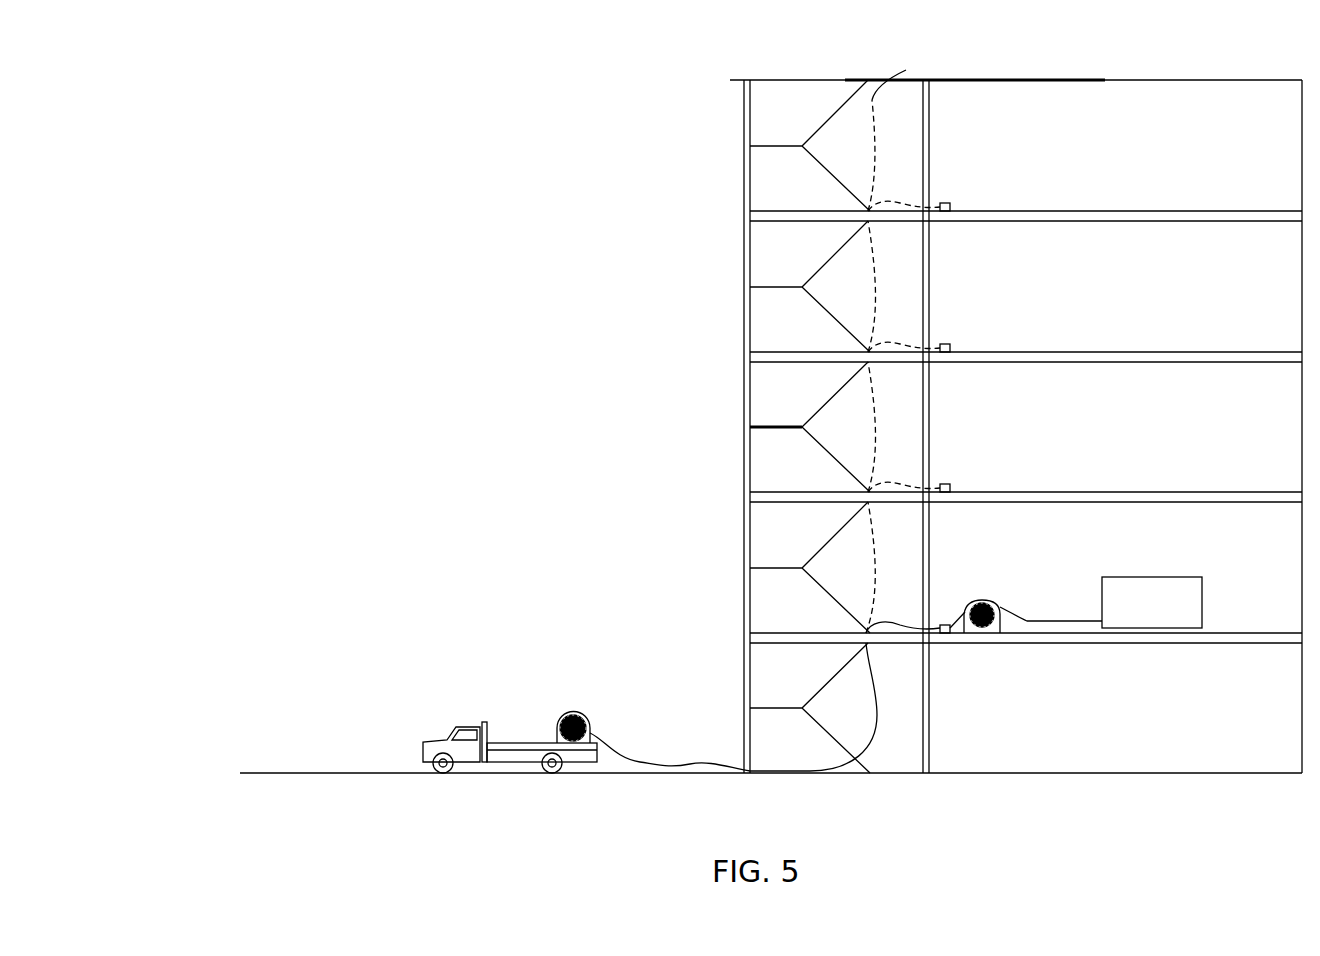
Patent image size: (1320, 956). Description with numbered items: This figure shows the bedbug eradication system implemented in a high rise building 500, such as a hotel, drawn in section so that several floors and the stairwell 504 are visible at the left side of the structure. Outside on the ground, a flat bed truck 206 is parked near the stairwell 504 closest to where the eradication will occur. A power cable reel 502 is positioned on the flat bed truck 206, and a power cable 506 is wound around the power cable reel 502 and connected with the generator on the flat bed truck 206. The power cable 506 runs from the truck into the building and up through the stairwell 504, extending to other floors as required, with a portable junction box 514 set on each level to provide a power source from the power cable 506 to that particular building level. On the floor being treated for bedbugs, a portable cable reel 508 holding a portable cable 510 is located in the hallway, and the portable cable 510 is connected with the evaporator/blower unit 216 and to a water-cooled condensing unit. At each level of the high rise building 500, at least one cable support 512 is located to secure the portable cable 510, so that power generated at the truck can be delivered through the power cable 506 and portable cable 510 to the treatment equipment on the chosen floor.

The flat bed truck 206 is at (437, 738).
The power cable reel 502 is at (573, 713).
The power cable 506 is at (873, 117).
The high rise building 500 is at (744, 62).
The stairwell 504 is at (782, 408).
The cable support 512 is at (873, 488).
The portable junction box 514 is at (950, 488).
The portable cable reel 508 is at (986, 602).
The portable cable 510 is at (1027, 622).
The evaporator/blower unit 216 is at (1133, 577).